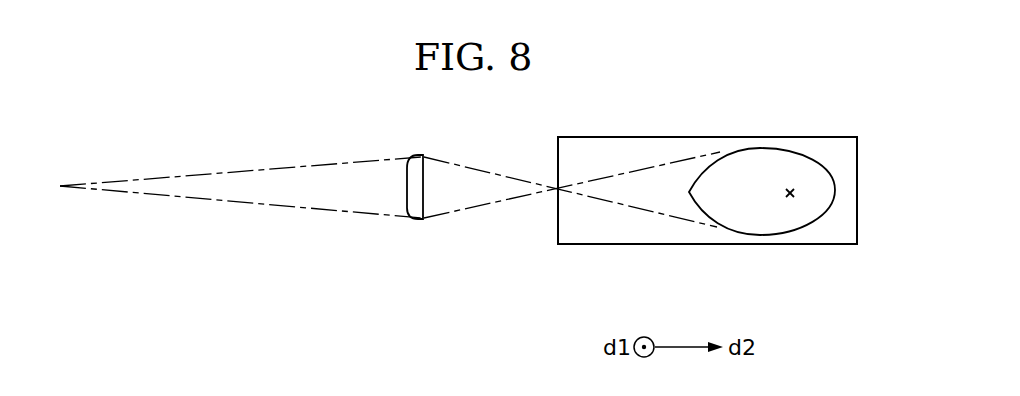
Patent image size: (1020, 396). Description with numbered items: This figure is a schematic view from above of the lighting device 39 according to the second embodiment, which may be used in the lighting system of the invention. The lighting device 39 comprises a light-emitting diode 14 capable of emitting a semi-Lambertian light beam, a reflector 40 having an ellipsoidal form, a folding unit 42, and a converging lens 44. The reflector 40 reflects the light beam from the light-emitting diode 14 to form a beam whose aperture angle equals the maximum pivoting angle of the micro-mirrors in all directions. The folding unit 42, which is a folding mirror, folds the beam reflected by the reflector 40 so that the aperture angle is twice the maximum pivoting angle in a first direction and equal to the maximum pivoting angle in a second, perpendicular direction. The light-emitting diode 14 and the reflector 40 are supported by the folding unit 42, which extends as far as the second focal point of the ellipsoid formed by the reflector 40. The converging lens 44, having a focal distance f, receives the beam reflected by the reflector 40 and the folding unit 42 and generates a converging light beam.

The lighting device 39 is at (354, 272).
The converging lens 44 is at (418, 178).
The folding unit 42 is at (640, 232).
The reflector 40 is at (765, 165).
The light-emitting diode 14 is at (793, 199).